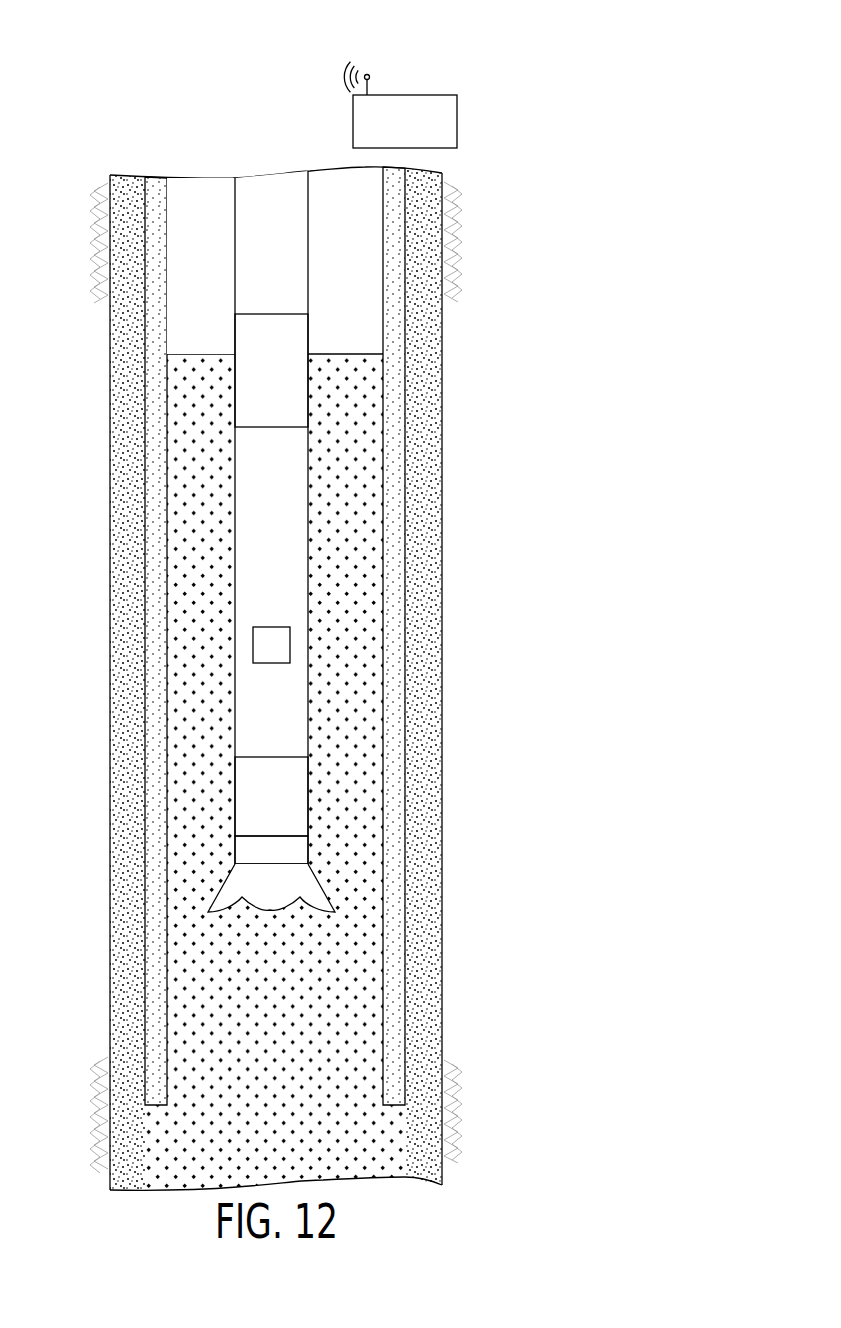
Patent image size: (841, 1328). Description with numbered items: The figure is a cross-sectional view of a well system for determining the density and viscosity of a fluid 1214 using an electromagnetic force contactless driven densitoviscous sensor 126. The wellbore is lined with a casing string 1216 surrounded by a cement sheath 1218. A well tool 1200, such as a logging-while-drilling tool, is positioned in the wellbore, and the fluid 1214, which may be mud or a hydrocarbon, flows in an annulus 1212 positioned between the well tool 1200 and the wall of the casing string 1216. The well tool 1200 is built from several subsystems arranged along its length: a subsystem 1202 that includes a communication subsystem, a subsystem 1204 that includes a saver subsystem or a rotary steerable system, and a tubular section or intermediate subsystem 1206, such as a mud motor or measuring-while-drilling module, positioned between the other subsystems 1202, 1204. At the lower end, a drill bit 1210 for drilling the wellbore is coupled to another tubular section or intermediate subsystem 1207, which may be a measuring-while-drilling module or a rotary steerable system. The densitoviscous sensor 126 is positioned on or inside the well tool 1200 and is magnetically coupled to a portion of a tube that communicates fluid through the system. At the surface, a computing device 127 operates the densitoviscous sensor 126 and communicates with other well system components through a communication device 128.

The densitoviscous sensor 126 is at (296, 647).
The computing device 127 is at (446, 120).
The communication device 128 is at (376, 66).
The well tool 1200 is at (236, 218).
The subsystem 1202 is at (290, 333).
The subsystem 1204 is at (296, 810).
The intermediate subsystem 1206 is at (256, 519).
The intermediate subsystem 1207 is at (296, 857).
The drill bit 1210 is at (270, 912).
The annulus 1212 is at (190, 302).
The fluid 1214 is at (366, 1024).
The casing string 1216 is at (395, 493).
The cement sheath 1218 is at (429, 740).